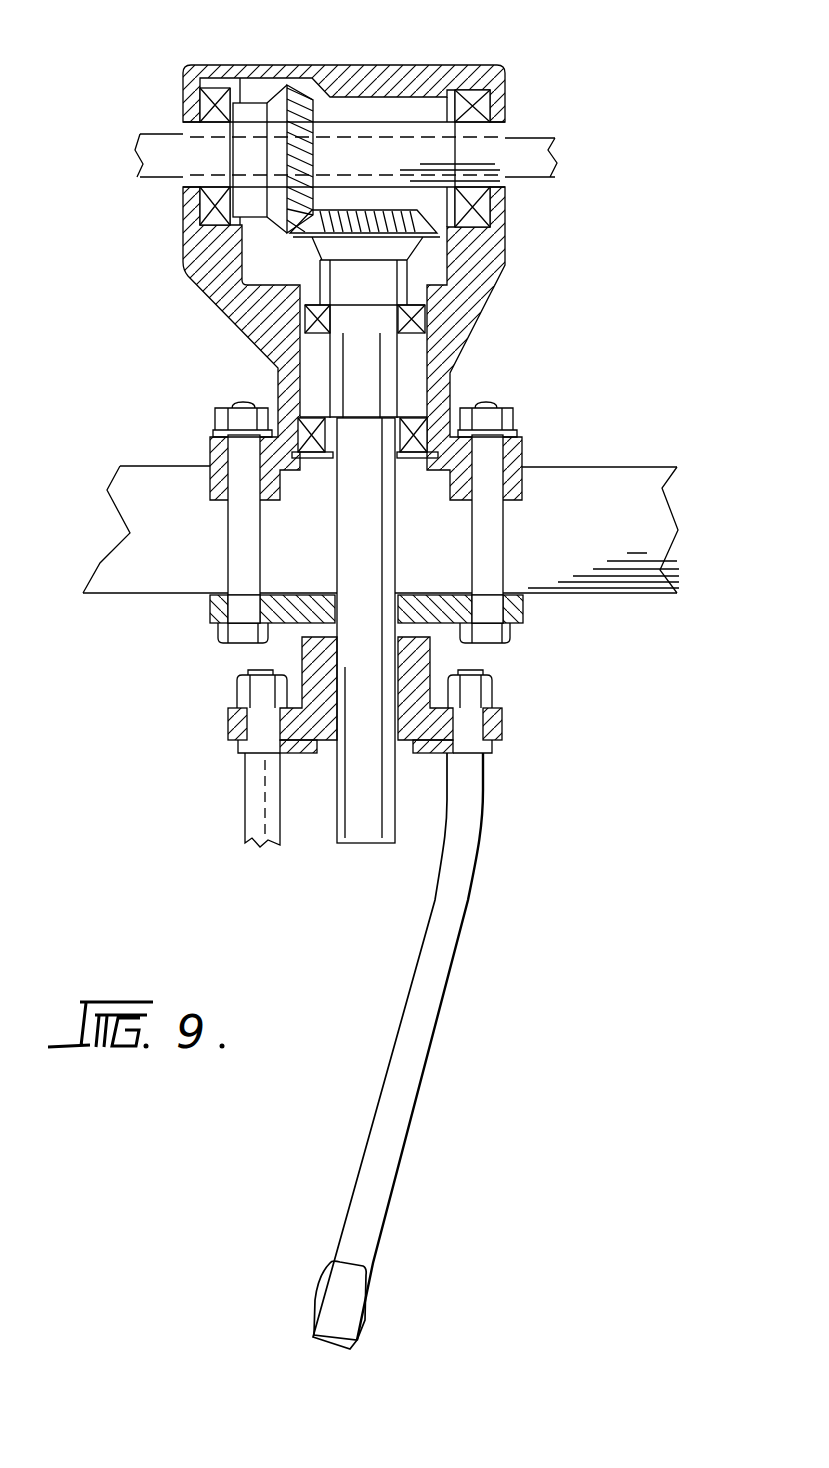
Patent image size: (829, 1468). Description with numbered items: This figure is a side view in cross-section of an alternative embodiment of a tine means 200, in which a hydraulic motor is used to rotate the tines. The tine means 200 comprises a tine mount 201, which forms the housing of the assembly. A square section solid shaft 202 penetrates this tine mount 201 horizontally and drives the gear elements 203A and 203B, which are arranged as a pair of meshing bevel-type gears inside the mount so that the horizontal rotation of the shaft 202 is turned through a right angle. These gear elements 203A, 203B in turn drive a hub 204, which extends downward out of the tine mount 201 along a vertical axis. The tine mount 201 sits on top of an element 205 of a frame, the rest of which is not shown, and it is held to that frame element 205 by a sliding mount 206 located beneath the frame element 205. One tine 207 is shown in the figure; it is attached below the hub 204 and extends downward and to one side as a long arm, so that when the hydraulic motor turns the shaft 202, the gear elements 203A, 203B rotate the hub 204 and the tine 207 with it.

The tine means 200 is at (214, 366).
The tine mount 201 is at (198, 253).
The square section solid shaft 202 is at (387, 122).
The gear element 203A is at (303, 85).
The gear element 203B is at (398, 237).
The hub 204 is at (365, 383).
The element of frame 205 is at (597, 497).
The sliding mount 206 is at (513, 614).
The tine 207 is at (430, 994).